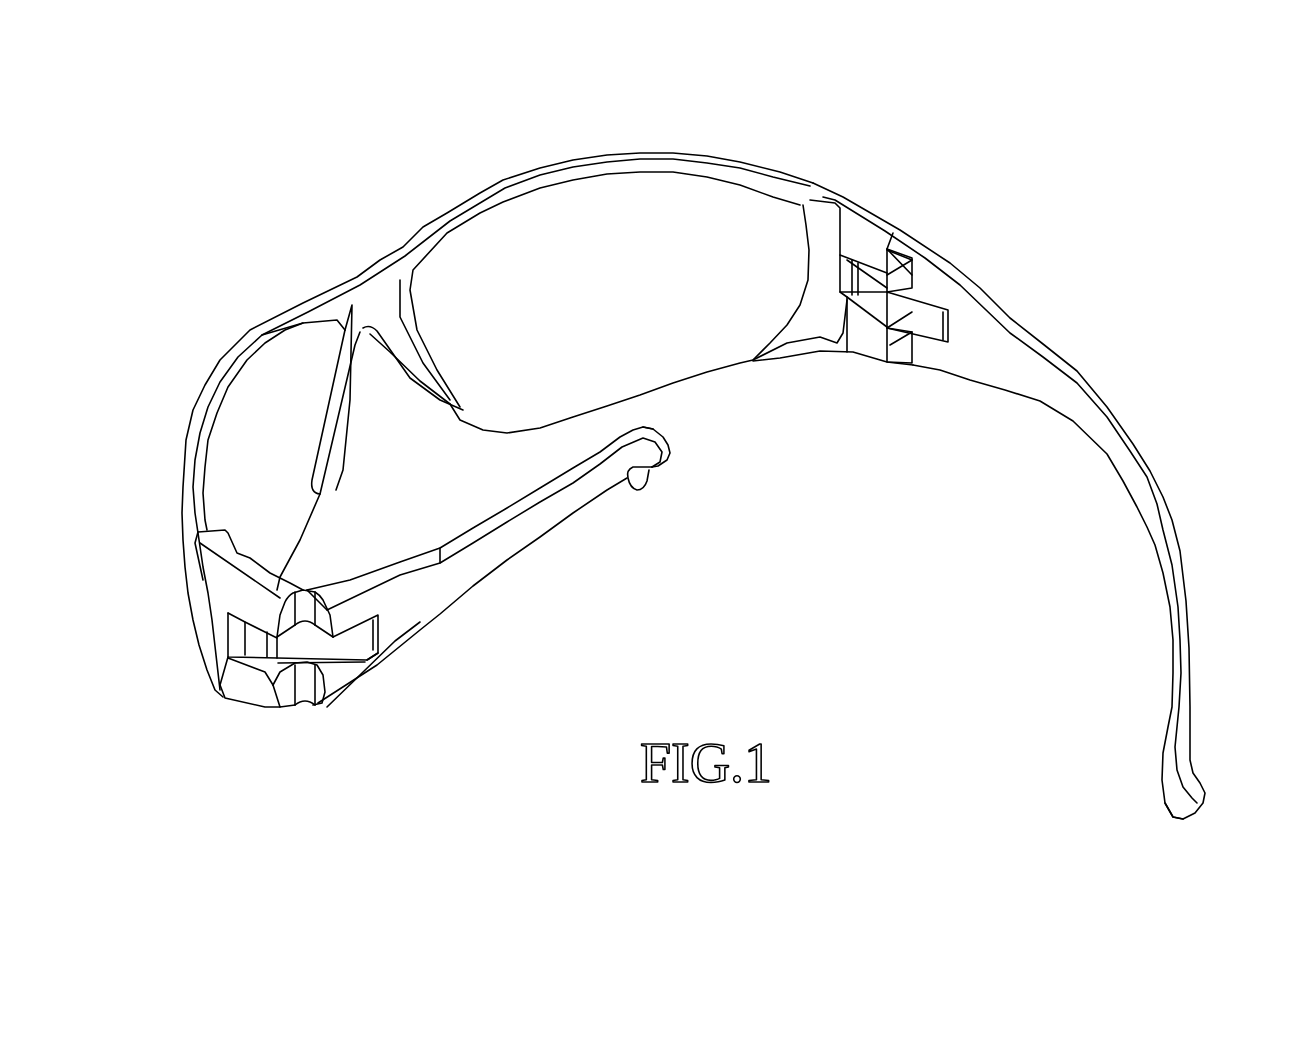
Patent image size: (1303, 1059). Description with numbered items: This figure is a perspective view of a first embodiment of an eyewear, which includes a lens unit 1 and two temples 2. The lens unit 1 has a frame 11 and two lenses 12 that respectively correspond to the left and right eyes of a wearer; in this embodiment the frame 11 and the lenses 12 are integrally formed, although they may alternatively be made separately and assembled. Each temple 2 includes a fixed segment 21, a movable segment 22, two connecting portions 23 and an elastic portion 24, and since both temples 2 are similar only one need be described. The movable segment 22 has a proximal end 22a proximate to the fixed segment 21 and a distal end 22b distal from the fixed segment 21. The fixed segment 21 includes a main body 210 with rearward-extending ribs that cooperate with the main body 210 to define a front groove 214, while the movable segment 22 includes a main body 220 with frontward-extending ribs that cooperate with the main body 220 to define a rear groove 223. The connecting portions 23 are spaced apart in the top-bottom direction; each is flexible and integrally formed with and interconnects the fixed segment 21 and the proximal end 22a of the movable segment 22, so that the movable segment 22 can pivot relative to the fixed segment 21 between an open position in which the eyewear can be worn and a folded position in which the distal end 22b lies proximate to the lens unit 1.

The lens unit 1 is at (413, 234).
The frame 11 is at (553, 178).
The lens 12 is at (642, 257).
The temple 2 is at (1078, 371).
The fixed segment 21 is at (867, 247).
The main body 210 is at (223, 633).
The front groove 214 is at (223, 690).
The movable segment 22 is at (1143, 491).
The main body 220 is at (450, 583).
The proximal end 22a is at (887, 249).
The distal end 22b is at (1183, 790).
The rear groove 223 is at (345, 665).
The connecting portion 23 is at (908, 247).
The elastic portion 24 is at (927, 312).